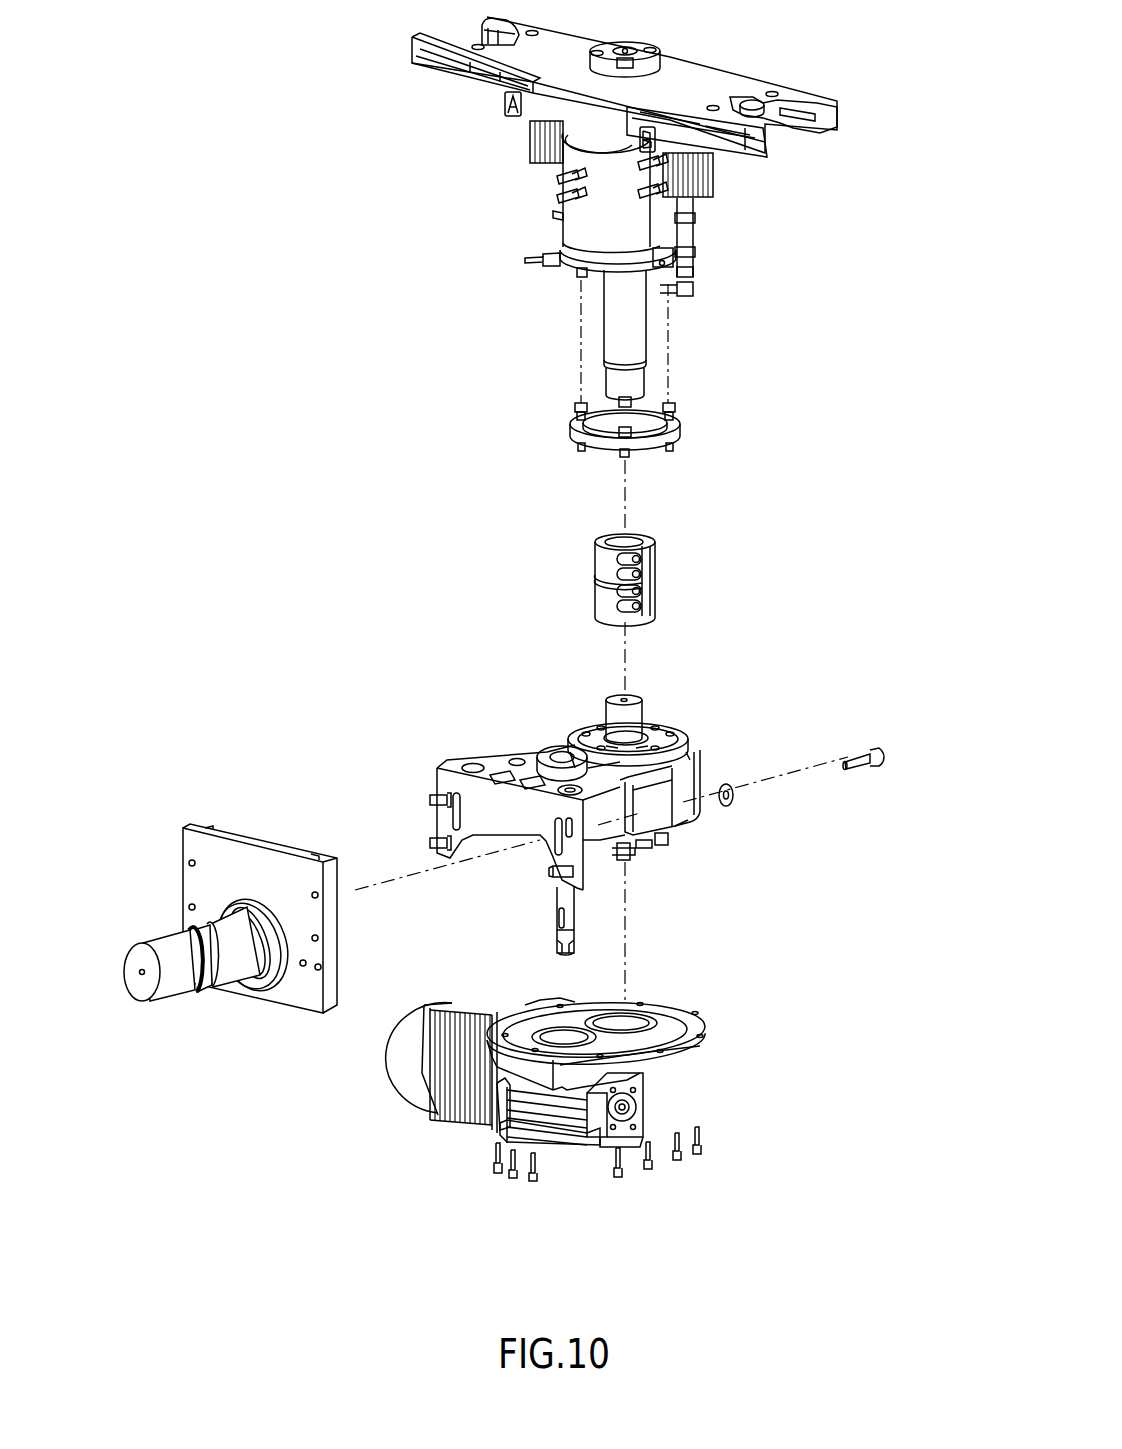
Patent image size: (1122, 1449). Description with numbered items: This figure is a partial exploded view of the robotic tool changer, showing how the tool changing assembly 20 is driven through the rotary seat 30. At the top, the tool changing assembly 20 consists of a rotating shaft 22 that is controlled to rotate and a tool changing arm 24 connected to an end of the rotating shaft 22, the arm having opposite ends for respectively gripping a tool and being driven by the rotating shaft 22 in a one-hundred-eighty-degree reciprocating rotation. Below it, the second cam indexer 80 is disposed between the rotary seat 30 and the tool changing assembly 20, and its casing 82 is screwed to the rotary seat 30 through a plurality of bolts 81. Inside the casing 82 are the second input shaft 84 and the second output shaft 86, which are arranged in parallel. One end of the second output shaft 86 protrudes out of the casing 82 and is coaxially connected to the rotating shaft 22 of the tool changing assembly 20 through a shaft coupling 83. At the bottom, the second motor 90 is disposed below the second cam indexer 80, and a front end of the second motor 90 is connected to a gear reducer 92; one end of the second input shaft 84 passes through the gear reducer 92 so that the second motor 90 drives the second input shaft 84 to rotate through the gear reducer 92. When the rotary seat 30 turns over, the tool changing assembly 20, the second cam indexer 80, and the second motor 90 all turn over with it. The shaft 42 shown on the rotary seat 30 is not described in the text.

The tool changing assembly 20 is at (525, 200).
The rotating shaft 22 is at (630, 318).
The tool changing arm 24 is at (695, 82).
The rotary seat 30 is at (180, 828).
The shaft 42 is at (160, 953).
The second cam indexer 80 is at (490, 758).
The bolts 81 is at (860, 748).
The casing 82 is at (690, 838).
The shaft coupling 83 is at (595, 557).
The second input shaft 84 is at (555, 920).
The second output shaft 86 is at (638, 712).
The second motor 90 is at (415, 1103).
The gear reducer 92 is at (600, 1115).